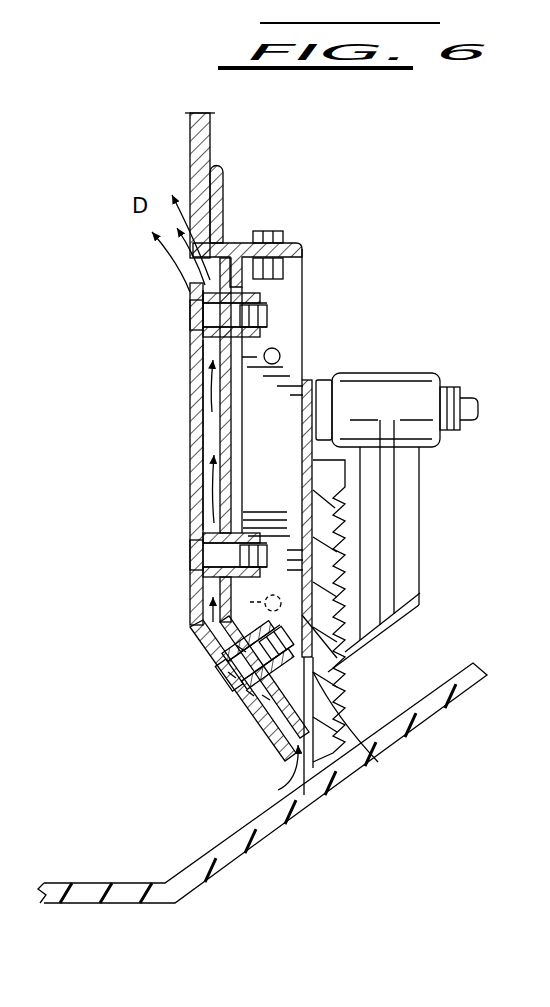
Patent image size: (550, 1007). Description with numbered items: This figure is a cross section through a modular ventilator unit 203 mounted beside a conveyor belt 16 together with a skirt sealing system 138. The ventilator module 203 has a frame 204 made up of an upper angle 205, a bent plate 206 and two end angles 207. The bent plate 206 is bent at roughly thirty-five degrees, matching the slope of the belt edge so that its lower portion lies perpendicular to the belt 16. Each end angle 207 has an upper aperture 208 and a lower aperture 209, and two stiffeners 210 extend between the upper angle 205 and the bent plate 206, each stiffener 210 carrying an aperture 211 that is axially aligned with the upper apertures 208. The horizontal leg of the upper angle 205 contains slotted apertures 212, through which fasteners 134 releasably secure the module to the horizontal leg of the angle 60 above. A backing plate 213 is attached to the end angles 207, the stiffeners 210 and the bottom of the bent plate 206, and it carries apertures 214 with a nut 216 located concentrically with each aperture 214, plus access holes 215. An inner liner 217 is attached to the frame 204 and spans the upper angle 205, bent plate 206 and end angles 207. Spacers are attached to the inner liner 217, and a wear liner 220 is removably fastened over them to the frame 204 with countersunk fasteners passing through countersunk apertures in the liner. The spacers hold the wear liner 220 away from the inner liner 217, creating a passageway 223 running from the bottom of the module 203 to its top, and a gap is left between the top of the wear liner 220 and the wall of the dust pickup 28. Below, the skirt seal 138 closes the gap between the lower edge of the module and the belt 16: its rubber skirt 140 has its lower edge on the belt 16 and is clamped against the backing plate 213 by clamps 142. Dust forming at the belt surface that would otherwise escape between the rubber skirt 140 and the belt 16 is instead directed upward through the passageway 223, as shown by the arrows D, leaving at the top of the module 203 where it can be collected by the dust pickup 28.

The conveyor belt 16 is at (214, 848).
The dust pickup 28 is at (190, 150).
The angle 60 is at (223, 184).
The fasteners 134 is at (263, 230).
The conveyor belt skirt seal 138 is at (458, 444).
The rubber skirt 140 is at (347, 675).
The clamps 142 is at (420, 494).
The modular ventilator unit 203 is at (406, 519).
The frame 204 is at (318, 283).
The upper angle 205 is at (306, 268).
The bent plate 206 is at (365, 727).
The end angles 207 is at (237, 438).
The upper aperture 208 is at (282, 350).
The lower aperture 209 is at (198, 628).
The stiffeners 210 is at (306, 304).
The aperture 211 is at (282, 357).
The slotted apertures 212 is at (303, 249).
The backing plate 213 is at (368, 620).
The apertures 214 is at (227, 438).
The access holes 215 is at (315, 538).
The nut 216 is at (320, 383).
The inner liner 217 is at (197, 422).
The wear liner 220 is at (190, 478).
The passageway 223 is at (193, 401).